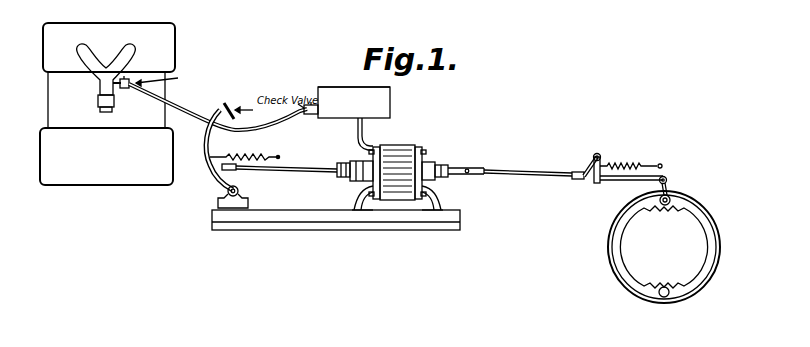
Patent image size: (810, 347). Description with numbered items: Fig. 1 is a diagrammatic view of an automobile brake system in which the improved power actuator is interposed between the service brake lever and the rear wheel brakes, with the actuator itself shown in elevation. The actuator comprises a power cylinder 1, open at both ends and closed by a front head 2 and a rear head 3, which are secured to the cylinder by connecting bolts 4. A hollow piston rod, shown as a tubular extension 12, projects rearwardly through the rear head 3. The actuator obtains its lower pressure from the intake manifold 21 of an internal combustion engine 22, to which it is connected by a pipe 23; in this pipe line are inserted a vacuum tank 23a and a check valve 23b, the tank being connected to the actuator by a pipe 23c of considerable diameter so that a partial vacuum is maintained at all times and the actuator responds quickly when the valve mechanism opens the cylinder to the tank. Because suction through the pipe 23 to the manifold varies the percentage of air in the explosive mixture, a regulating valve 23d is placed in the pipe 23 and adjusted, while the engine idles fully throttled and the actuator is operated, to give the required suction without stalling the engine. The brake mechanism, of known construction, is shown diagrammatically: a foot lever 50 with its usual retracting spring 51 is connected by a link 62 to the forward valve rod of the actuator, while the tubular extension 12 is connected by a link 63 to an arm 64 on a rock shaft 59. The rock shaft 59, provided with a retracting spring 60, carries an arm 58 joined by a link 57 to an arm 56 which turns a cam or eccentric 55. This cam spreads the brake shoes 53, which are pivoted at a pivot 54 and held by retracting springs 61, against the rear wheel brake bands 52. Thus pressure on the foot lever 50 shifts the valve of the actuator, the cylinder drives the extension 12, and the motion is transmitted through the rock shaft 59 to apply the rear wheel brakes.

The power cylinder 1 is at (411, 166).
The front head 2 is at (367, 183).
The rear head 3 is at (424, 184).
The connecting bolts 4 is at (391, 148).
The tubular extension 12 is at (461, 168).
The intake manifold 21 is at (95, 80).
The internal combustion engine 22 is at (163, 52).
The pipe 23 is at (282, 127).
The vacuum tank 23a is at (393, 103).
The check valve 23b is at (327, 87).
The pipe 23c is at (364, 132).
The regulating valve 23d is at (130, 90).
The foot lever 50 is at (222, 108).
The retracting spring 51 is at (245, 147).
The rear wheel brake bands 52 is at (704, 210).
The brake shoes 53 is at (713, 226).
The pivot 54 is at (664, 299).
The cam or eccentric 55 is at (674, 196).
The arm 56 is at (668, 178).
The link 57 is at (623, 181).
The arm 58 is at (596, 183).
The rock shaft 59 is at (599, 155).
The retracting spring 60 is at (633, 165).
The retracting springs 61 is at (667, 212).
The link 62 is at (291, 171).
The link 63 is at (528, 173).
The arm 64 is at (592, 164).